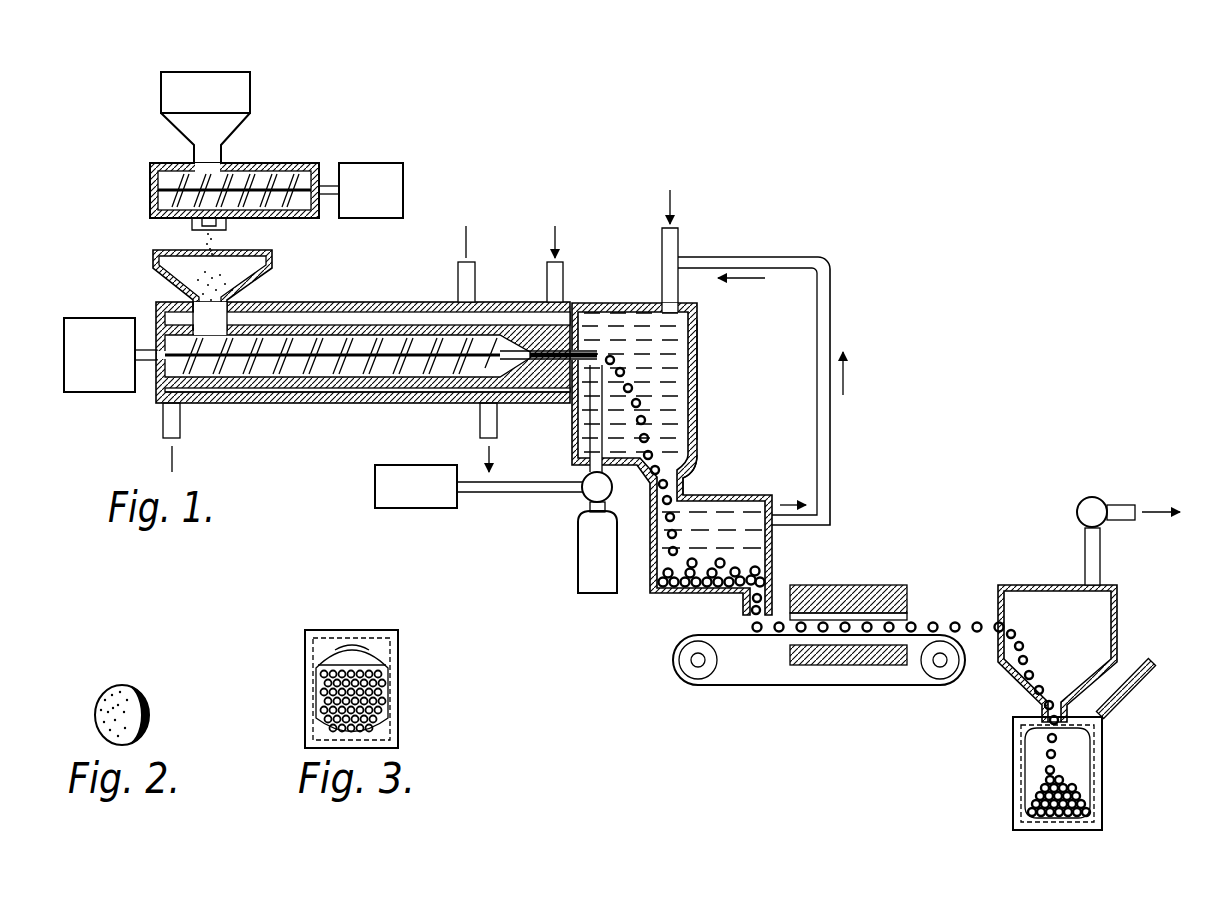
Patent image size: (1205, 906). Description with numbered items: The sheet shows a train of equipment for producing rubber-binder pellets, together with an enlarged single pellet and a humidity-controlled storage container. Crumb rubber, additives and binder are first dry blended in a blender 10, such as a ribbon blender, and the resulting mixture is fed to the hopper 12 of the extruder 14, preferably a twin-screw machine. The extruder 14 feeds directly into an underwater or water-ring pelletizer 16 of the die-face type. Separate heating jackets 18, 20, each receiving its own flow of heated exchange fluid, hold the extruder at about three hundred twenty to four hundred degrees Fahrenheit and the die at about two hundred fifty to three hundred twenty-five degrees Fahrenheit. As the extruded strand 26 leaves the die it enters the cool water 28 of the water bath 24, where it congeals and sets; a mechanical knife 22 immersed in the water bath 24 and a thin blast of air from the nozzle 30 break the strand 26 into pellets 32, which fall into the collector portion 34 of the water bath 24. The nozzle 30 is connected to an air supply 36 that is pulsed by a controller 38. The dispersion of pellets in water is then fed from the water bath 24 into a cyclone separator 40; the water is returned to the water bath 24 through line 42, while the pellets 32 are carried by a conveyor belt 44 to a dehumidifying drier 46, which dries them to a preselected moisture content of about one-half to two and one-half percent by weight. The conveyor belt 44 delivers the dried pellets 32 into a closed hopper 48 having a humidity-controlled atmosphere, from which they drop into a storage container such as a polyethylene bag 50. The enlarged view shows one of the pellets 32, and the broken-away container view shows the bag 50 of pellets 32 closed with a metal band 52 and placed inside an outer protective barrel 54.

In FIG. 1, the blender 10 is at (283, 157).
In FIG. 1, the hopper 12 is at (272, 257).
In FIG. 1, the extruder 14 is at (349, 299).
In FIG. 1, the underwater or water-ring pelletizer 16 is at (704, 391).
In FIG. 1, the heating jacket 18 is at (330, 405).
In FIG. 1, the heating jacket 20 is at (533, 300).
In FIG. 1, the mechanical knife 22 is at (572, 415).
In FIG. 1, the water bath 24 is at (698, 362).
In FIG. 1, the extruded strand 26 is at (606, 353).
In FIG. 1, the water 28 is at (650, 300).
In FIG. 1, the nozzle 30 is at (616, 359).
In FIG. 1, the pellets 32 is at (646, 420).
In FIG. 2, the pellets 32 is at (98, 700).
In FIG. 3, the pellets 32 is at (398, 706).
In FIG. 1, the collector portion 34 is at (690, 476).
In FIG. 1, the air supply 36 is at (583, 550).
In FIG. 1, the controller 38 is at (418, 510).
In FIG. 1, the cyclone separator 40 is at (718, 496).
In FIG. 1, the line 42 is at (832, 300).
In FIG. 1, the conveyor belt 44 is at (722, 634).
In FIG. 1, the dehumidifying drier 46 is at (889, 585).
In FIG. 1, the closed hopper 48 is at (1036, 585).
In FIG. 1, the polyethylene bag 50 is at (1013, 745).
In FIG. 3, the polyethylene bag 50 is at (398, 648).
In FIG. 3, the band 52 is at (370, 635).
In FIG. 1, the barrel 54 is at (1013, 780).
In FIG. 3, the barrel 54 is at (306, 668).